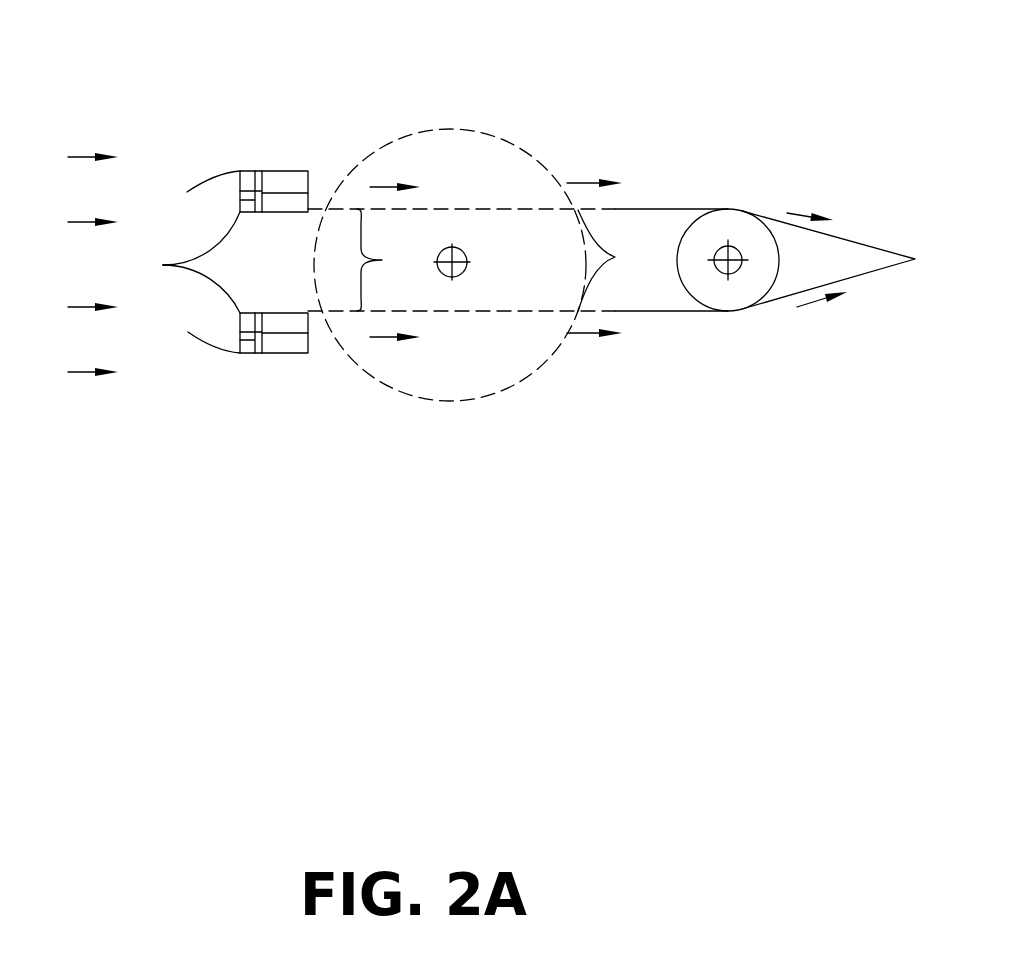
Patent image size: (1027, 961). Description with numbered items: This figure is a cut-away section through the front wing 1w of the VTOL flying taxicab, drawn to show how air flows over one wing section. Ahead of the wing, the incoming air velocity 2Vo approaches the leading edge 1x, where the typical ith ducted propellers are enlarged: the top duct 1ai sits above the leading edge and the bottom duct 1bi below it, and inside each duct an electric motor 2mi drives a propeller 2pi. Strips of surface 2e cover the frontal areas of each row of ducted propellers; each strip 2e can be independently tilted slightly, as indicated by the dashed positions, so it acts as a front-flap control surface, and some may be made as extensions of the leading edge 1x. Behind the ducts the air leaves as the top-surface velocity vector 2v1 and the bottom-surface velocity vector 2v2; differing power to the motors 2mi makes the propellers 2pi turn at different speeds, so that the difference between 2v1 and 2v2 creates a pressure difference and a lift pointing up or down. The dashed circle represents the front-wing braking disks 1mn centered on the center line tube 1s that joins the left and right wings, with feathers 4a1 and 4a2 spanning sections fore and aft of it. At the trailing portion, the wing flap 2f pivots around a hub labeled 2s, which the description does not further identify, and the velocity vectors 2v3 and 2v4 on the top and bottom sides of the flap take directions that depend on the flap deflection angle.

The leading edge 1x is at (167, 265).
The propeller 2pi is at (264, 203).
The independent front flap 2e is at (188, 193).
The electric motor 2mi is at (248, 191).
The ith ducted propeller of front wing top row 1ai is at (309, 171).
The ith ducted propeller of front wing bottom row 1bi is at (310, 355).
The air velocity in front of wing 2Vo is at (64, 262).
The front wing braking disks 1mn is at (487, 128).
The top-surface air velocity vector 2v1 is at (496, 187).
The bottom-surface air velocity vector 2v2 is at (496, 333).
The front wing 1w is at (505, 297).
The center line tube 1s is at (464, 252).
The feathers 4a1 is at (399, 260).
The feathers 4a2 is at (626, 260).
The hub shaft 2s is at (729, 246).
The wing flap 2f is at (822, 273).
The flap top-side air velocity vector 2v3 is at (844, 218).
The flap bottom-side air velocity vector 2v4 is at (857, 296).